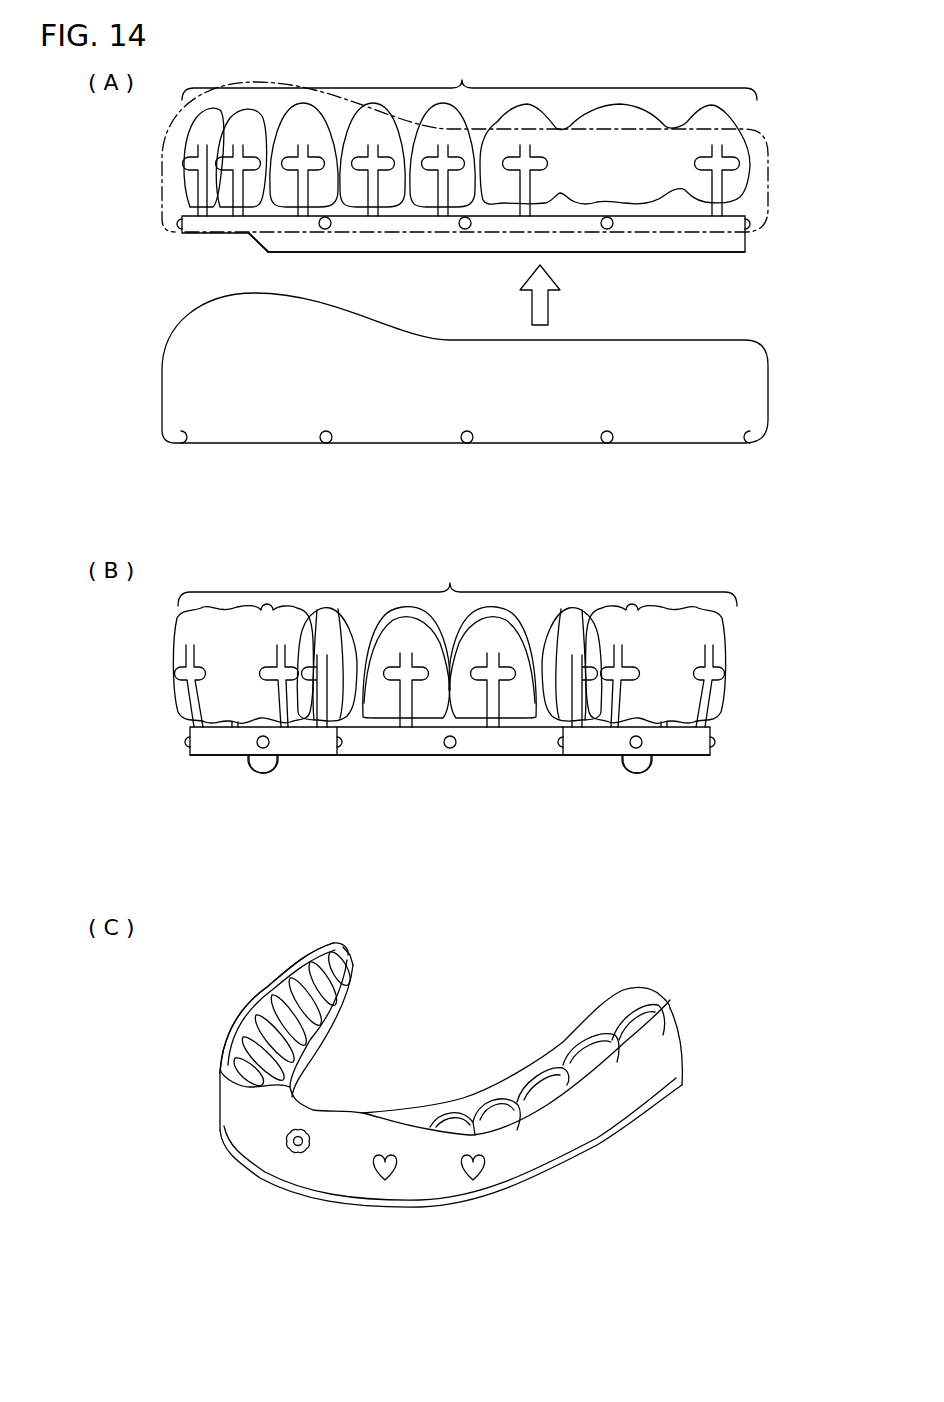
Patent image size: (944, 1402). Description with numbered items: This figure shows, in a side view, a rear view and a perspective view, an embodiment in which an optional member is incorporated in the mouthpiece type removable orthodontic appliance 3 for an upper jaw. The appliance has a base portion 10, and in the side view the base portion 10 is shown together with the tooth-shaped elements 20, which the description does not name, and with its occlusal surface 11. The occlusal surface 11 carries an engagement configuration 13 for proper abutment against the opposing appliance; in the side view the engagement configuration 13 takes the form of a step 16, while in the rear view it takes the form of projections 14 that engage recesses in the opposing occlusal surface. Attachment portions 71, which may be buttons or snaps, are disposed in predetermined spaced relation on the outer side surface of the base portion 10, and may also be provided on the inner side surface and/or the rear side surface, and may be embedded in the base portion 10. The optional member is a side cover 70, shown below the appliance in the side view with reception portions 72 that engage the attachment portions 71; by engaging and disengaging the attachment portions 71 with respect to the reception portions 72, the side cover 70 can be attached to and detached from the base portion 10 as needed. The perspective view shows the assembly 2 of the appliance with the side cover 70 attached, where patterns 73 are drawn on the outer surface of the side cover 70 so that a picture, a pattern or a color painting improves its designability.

The mouthguard 2 is at (562, 986).
The orthodontic appliance 3 is at (779, 243).
The base portion 10 is at (182, 230).
The occlusal surface 11 is at (735, 253).
The engagement configuration 13 is at (449, 503).
The projections 14 is at (263, 774).
The step 16 is at (262, 244).
The artificial teeth 20 is at (491, 1114).
The side cover 70 is at (770, 160).
The attachment portions 71 is at (178, 225).
The reception portions 72 is at (183, 444).
The patterns 73 is at (298, 1160).